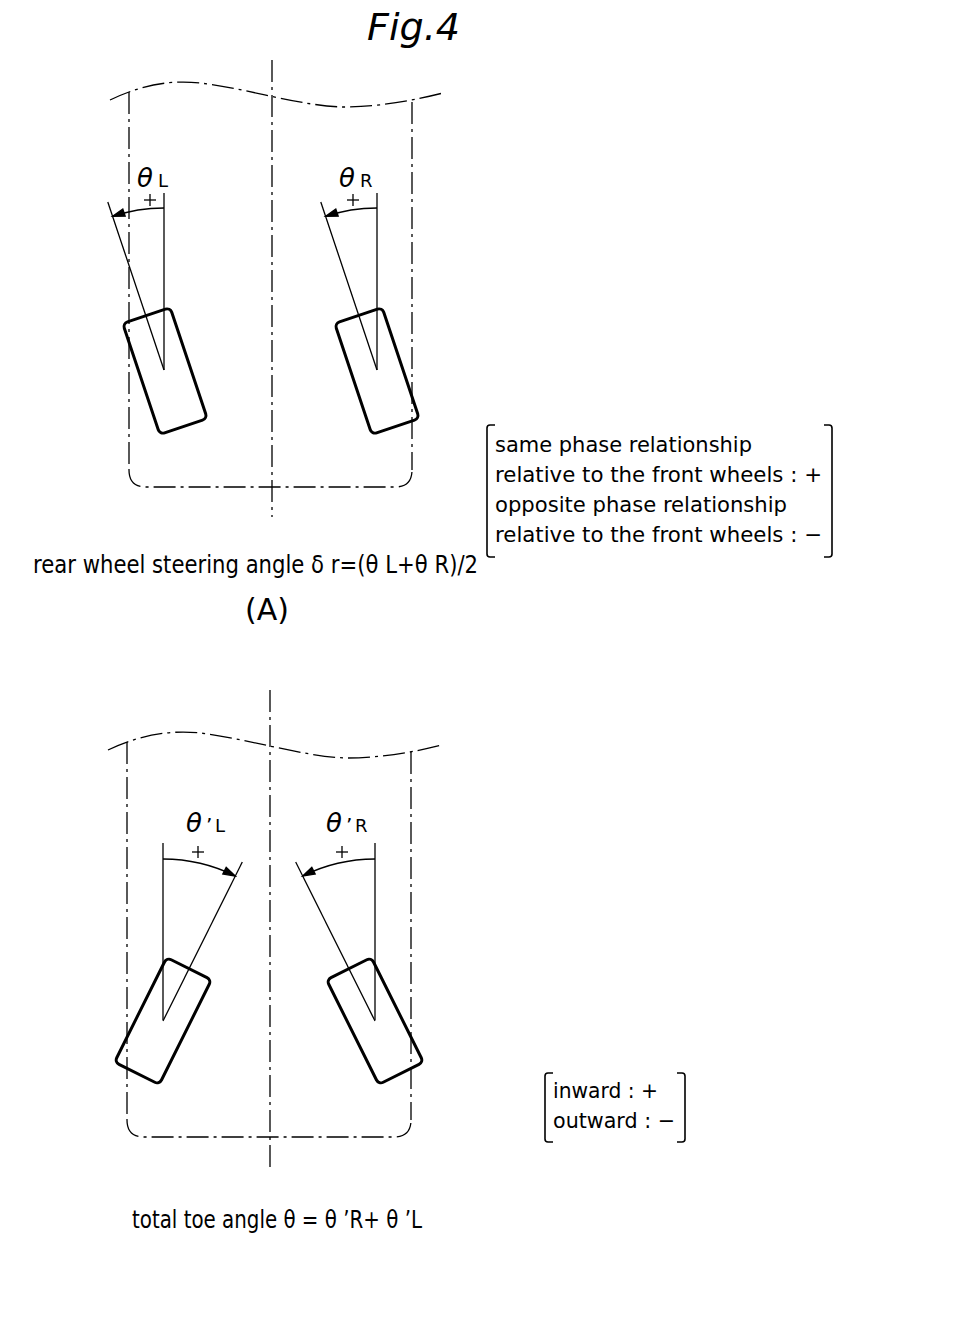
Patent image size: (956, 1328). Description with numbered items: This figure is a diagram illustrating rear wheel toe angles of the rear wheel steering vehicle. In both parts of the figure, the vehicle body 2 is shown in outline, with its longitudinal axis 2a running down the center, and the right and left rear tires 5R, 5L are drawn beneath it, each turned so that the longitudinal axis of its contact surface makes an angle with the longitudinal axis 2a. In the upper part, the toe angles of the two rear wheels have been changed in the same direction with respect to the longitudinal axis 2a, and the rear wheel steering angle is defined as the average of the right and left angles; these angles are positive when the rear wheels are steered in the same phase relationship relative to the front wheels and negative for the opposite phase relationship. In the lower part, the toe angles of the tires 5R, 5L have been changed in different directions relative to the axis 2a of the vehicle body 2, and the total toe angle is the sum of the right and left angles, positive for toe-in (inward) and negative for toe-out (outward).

The vehicle body 2 is at (412, 305).
The longitudinal axis of the vehicle 2a is at (272, 507).
The left rear tire 5L is at (151, 390).
The right rear tire 5R is at (402, 388).